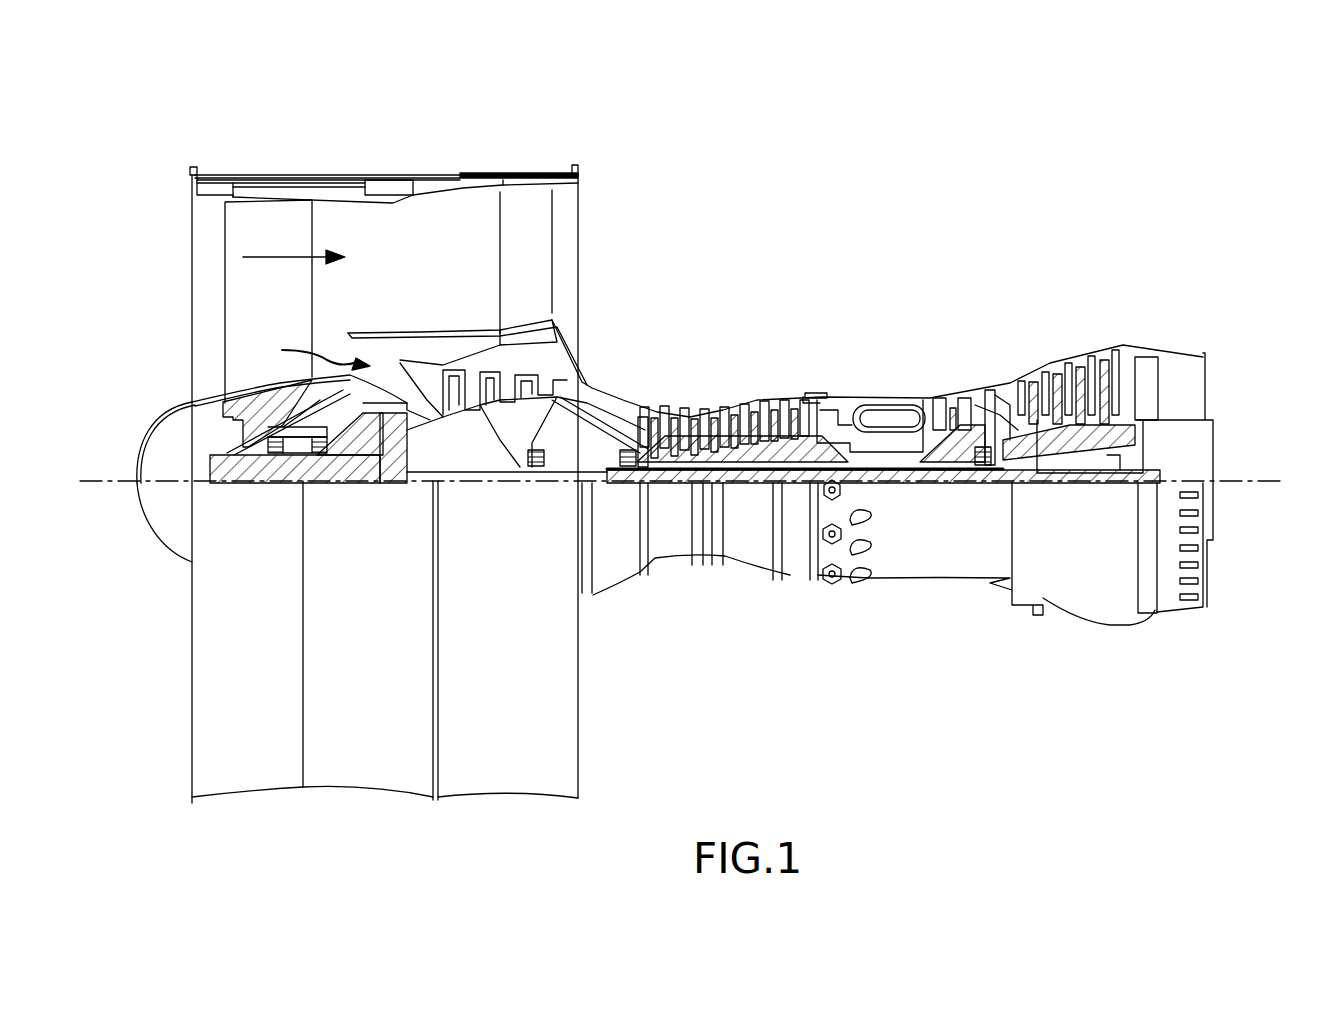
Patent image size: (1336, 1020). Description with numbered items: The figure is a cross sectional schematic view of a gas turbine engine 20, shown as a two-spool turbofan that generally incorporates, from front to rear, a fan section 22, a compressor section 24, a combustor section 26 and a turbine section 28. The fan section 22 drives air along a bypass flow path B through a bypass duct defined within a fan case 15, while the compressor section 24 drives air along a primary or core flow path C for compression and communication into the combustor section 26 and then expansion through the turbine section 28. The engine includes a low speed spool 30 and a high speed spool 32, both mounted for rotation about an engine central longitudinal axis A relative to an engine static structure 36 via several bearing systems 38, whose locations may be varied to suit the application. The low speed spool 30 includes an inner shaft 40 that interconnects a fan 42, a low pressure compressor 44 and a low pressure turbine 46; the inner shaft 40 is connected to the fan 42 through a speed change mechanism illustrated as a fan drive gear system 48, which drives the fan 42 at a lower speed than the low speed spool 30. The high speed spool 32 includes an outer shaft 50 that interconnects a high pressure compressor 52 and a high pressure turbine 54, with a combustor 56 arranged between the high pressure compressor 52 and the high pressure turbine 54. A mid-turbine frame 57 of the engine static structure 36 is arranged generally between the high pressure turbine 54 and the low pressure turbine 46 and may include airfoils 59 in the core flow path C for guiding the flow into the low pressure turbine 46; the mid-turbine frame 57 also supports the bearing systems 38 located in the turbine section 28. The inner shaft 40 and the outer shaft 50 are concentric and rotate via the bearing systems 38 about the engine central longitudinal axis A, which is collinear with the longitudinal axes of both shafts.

The fan case 15 is at (384, 190).
The gas turbine engine 20 is at (902, 186).
The fan section 22 is at (298, 166).
The compressor section 24 is at (643, 376).
The combustor section 26 is at (873, 354).
The turbine section 28 is at (1032, 322).
The low speed spool 30 is at (754, 484).
The high speed spool 32 is at (806, 436).
The engine static structure 36 is at (796, 558).
The bearing systems 38 is at (536, 476).
The inner shaft 40 is at (606, 484).
The fan 42 is at (224, 381).
The low pressure compressor 44 is at (509, 379).
The low pressure turbine 46 is at (1084, 368).
The fan drive gear system 48 is at (393, 478).
The outer shaft 50 is at (870, 466).
The high pressure compressor 52 is at (745, 408).
The high pressure turbine 54 is at (935, 396).
The combustor 56 is at (896, 412).
The mid-turbine frame 57 is at (994, 380).
The airfoils 59 is at (988, 416).
The engine central longitudinal axis A is at (1264, 476).
The bypass flow path B is at (274, 260).
The core flow path C is at (313, 352).